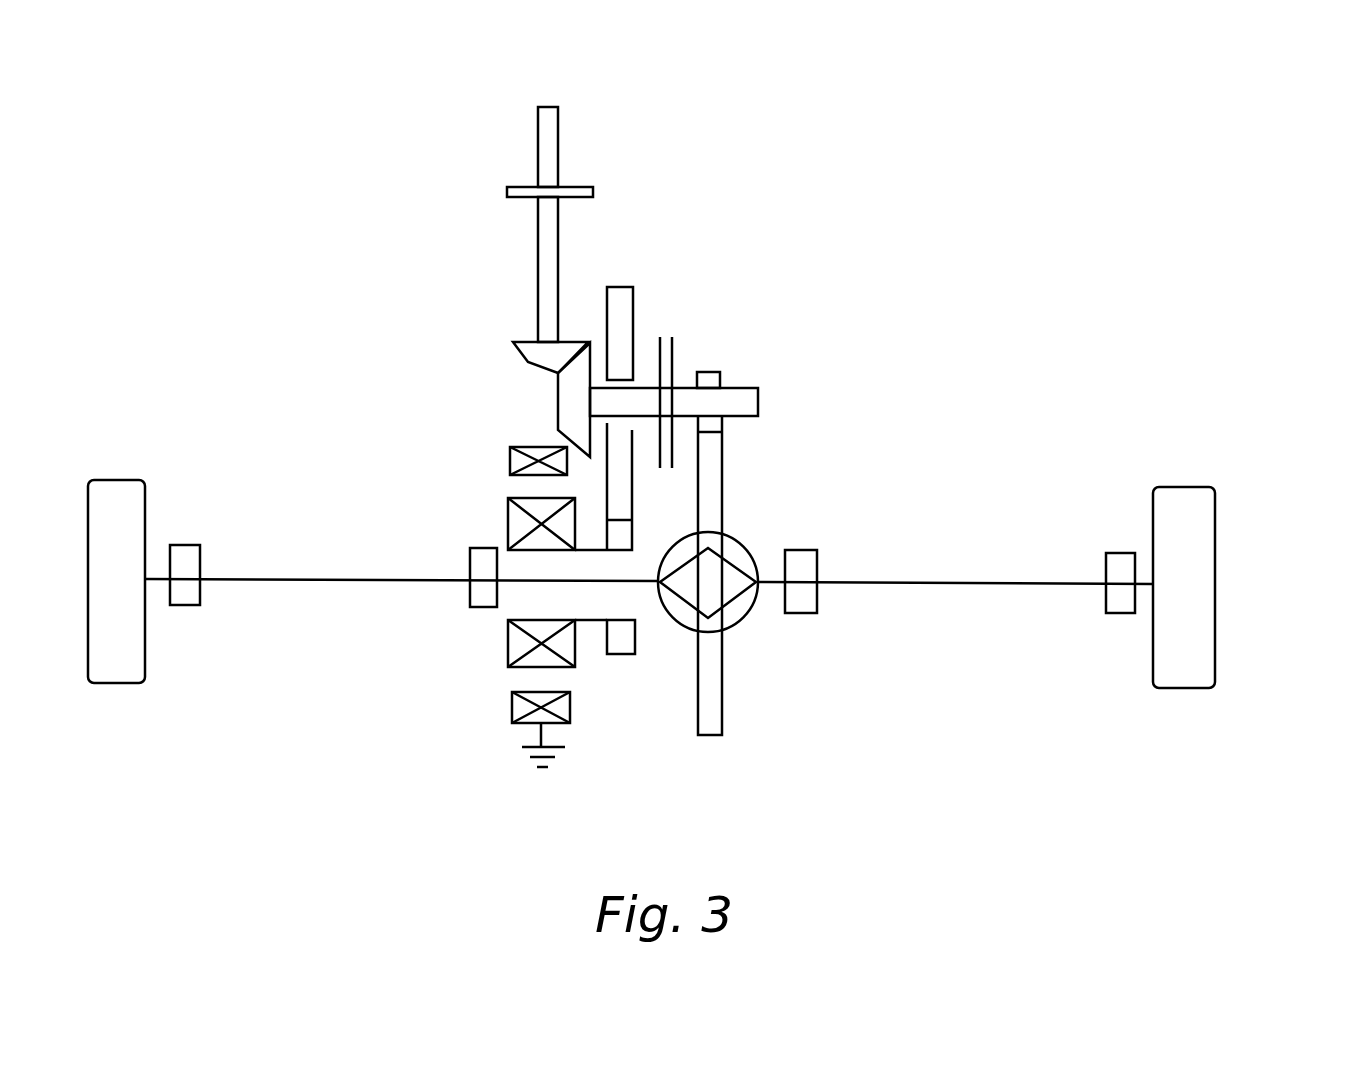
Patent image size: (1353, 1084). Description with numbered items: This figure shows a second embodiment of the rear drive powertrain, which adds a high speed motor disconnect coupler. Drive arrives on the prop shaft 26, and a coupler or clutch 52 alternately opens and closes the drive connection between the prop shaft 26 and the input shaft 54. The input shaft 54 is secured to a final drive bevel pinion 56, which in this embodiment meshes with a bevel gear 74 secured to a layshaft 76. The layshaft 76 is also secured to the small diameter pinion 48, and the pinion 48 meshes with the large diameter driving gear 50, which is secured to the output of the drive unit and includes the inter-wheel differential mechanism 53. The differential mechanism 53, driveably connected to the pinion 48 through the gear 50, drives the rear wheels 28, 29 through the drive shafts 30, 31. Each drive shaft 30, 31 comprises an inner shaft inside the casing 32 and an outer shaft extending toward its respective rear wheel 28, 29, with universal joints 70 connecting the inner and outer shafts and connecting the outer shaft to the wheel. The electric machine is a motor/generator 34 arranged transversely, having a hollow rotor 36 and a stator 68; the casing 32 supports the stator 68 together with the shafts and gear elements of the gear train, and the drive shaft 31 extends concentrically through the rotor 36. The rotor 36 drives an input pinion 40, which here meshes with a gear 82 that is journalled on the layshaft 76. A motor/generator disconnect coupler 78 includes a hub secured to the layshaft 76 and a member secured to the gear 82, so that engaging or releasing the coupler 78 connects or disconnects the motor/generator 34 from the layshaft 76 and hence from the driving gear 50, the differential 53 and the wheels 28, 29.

The prop shaft 26 is at (538, 143).
The coupler or clutch 52 is at (577, 185).
The input shaft 54 is at (558, 250).
The final drive bevel pinion 56 is at (513, 348).
The bevel gear 74 is at (555, 407).
The layshaft 76 is at (760, 404).
The gear 82 is at (625, 287).
The motor/generator disconnect coupler 78 is at (677, 345).
The small diameter gear 48 is at (720, 373).
The large diameter driving gear 50 is at (708, 737).
The inter-wheel differential mechanism 53 is at (742, 622).
The hollow rotor 36 is at (503, 520).
The motor/generator 34 is at (467, 667).
The input pinion 40 is at (622, 655).
The stator 68 is at (512, 707).
The casing 32 is at (520, 755).
The drive shaft 31 is at (285, 582).
The drive shaft 30 is at (885, 586).
The rear wheel 29 is at (105, 684).
The rear wheel 28 is at (1185, 692).
The universal joints 70 is at (178, 545).